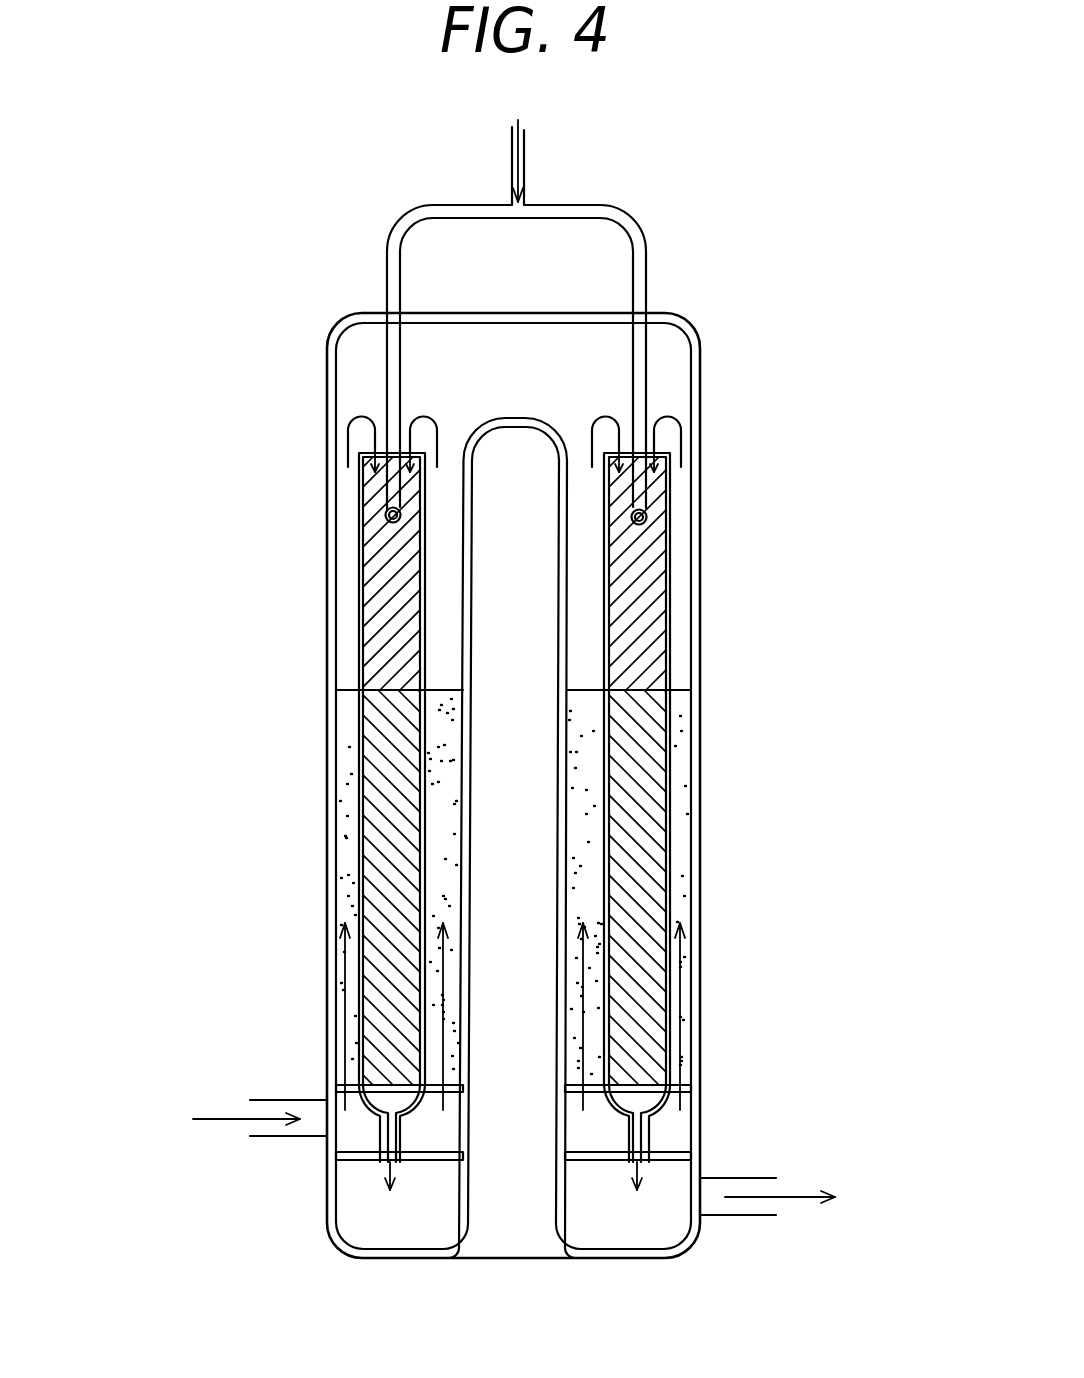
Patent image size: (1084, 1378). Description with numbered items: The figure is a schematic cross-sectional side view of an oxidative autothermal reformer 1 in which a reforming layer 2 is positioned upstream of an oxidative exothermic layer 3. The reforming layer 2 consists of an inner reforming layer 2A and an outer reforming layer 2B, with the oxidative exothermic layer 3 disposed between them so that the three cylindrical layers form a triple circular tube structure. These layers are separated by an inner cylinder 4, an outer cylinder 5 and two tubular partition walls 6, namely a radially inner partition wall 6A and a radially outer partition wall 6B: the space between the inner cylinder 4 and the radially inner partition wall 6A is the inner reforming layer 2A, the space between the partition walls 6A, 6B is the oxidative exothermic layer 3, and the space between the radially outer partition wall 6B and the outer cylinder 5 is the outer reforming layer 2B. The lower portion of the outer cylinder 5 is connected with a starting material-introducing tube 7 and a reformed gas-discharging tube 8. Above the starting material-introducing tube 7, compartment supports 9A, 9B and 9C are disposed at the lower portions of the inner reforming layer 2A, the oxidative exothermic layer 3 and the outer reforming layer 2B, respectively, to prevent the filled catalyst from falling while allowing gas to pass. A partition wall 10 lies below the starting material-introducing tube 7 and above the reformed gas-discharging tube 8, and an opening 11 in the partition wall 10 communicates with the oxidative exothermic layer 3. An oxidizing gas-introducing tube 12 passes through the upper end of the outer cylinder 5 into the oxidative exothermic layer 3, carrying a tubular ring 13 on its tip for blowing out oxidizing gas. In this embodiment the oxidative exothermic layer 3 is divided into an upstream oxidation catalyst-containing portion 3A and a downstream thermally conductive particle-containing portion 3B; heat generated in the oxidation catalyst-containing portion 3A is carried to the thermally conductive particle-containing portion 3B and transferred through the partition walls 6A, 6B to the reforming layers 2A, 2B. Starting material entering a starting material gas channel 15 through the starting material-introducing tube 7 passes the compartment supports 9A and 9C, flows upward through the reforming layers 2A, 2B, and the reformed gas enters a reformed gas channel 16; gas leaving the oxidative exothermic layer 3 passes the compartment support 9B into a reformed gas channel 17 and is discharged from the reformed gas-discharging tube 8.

The oxidative autothermal reformer 1 is at (699, 321).
The reforming layer 2 is at (610, 886).
The inner reforming layer 2A is at (586, 908).
The outer reforming layer 2B is at (684, 850).
The oxidative exothermic layer 3 is at (529, 771).
The oxidation catalyst-containing portion 3A is at (653, 617).
The thermally conductive particle-containing portion 3B is at (643, 740).
The inner cylinder 4 is at (560, 923).
The outer cylinder 5 is at (701, 549).
The tubular partition walls 6 is at (619, 807).
The radially inner partition wall 6A is at (608, 1037).
The radially outer partition wall 6B is at (666, 978).
The starting material-introducing tube 7 is at (298, 1130).
The reformed gas-discharging tube 8 is at (727, 1208).
The compartment support 9A is at (425, 1068).
The compartment support 9B is at (395, 1078).
The compartment support 9C is at (340, 1082).
The partition wall 10 is at (681, 1159).
The opening 11 is at (641, 1160).
The oxidizing gas-introducing tube 12 is at (602, 206).
The tubular ring 13 is at (649, 514).
The starting material gas channel 15 is at (362, 1140).
The reformed gas channel 16 is at (360, 362).
The reformed gas channel 17 is at (630, 1230).